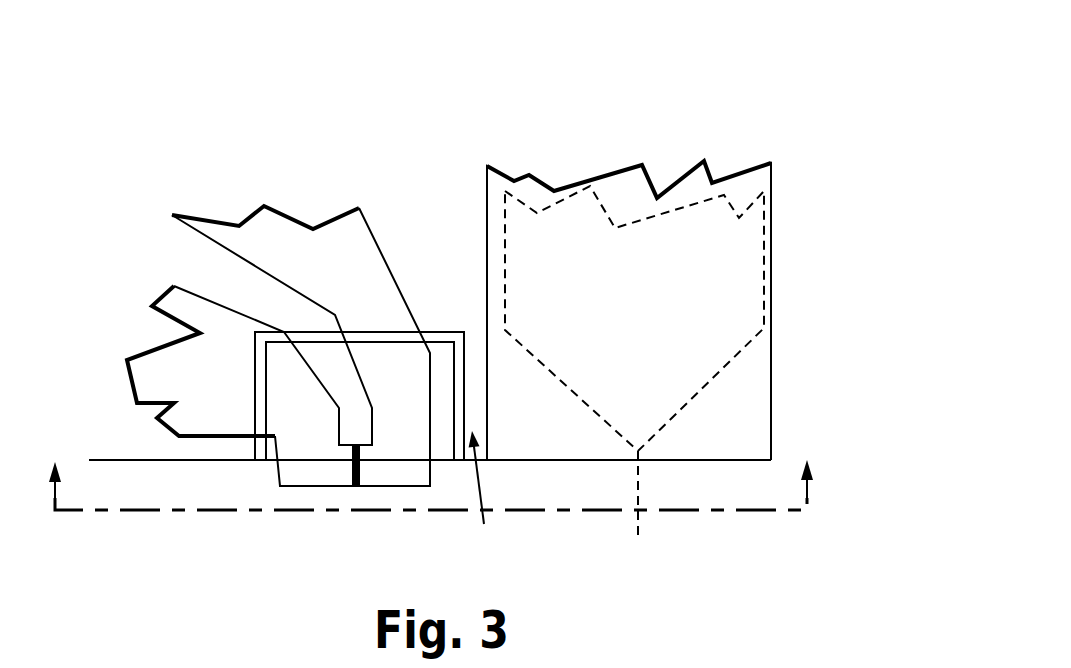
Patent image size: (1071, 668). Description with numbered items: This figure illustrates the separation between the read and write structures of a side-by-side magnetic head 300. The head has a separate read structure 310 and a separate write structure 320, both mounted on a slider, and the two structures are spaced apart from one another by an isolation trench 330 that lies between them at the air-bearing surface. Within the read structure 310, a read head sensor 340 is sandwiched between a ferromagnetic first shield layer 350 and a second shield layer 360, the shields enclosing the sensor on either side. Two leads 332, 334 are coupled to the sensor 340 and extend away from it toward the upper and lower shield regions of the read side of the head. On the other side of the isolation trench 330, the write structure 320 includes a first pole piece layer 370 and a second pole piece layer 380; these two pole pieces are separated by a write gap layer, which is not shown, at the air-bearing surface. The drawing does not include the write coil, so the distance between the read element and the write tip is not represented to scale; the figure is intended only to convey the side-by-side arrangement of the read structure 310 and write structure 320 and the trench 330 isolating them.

The side-by-side magnetic head 300 is at (690, 74).
The read structure 310 is at (150, 206).
The write structure 320 is at (530, 158).
The isolation trench 330 is at (372, 532).
The lead 332 is at (333, 228).
The lead 334 is at (178, 303).
The read head sensor 340 is at (353, 484).
The first shield layer 350 is at (253, 395).
The second shield layer 360 is at (438, 347).
The first pole piece layer 370 is at (770, 387).
The second pole piece layer 380 is at (748, 268).